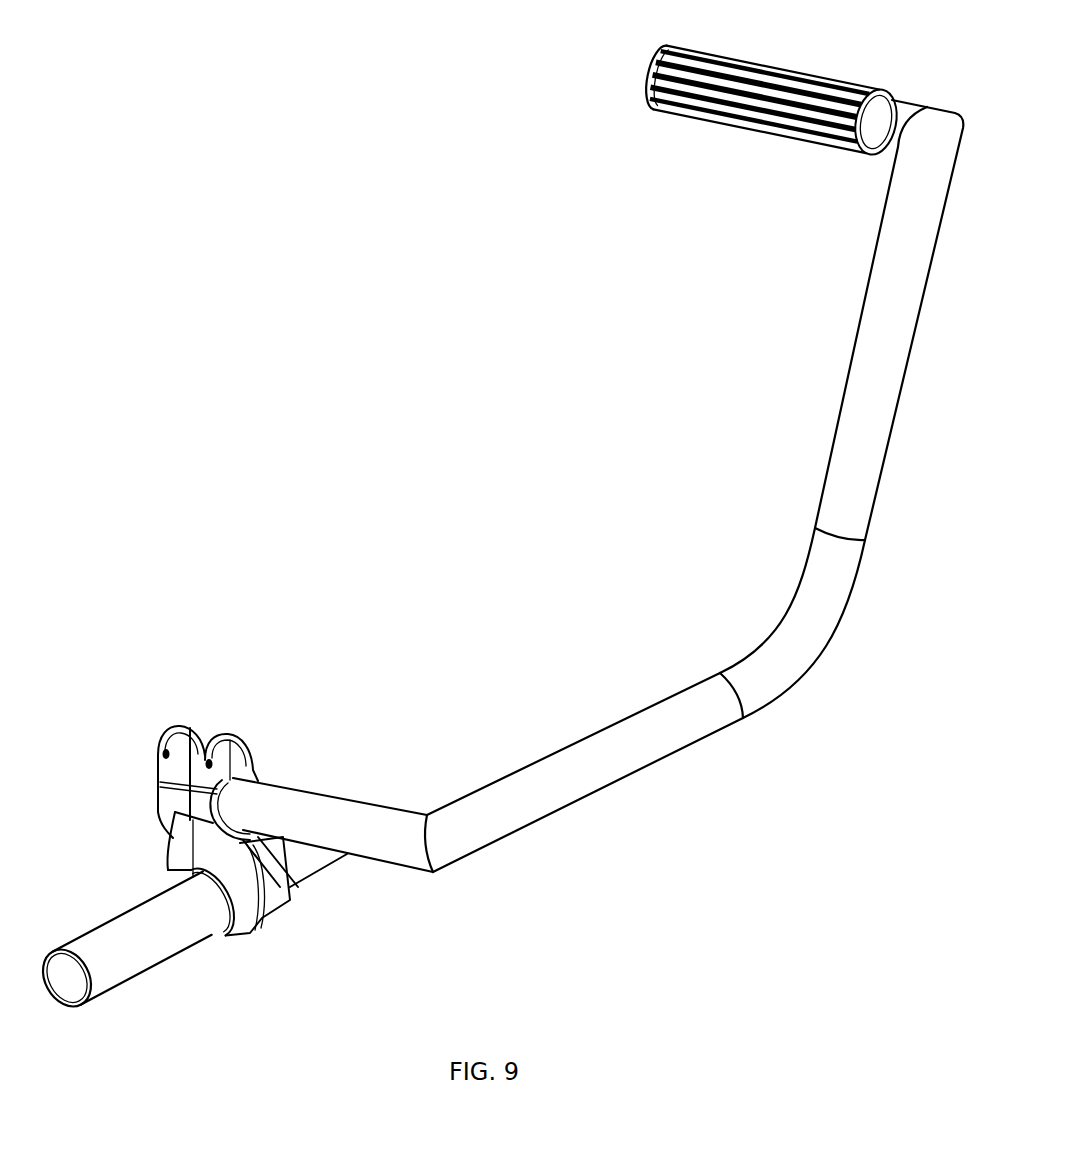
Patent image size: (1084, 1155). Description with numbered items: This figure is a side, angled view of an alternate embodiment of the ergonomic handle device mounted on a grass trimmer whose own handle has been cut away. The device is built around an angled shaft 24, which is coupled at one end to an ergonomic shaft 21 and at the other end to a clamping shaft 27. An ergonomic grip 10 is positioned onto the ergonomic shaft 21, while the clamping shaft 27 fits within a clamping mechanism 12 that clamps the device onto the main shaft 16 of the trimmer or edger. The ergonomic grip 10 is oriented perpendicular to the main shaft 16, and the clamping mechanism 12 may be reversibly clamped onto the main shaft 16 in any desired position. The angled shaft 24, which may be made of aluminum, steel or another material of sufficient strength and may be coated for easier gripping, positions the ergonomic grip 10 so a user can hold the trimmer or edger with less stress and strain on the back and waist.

The ergonomic grip 10 is at (702, 135).
The ergonomic shaft 21 is at (915, 88).
The angled shaft 24 is at (790, 699).
The clamping shaft 27 is at (318, 798).
The main shaft 16 is at (119, 969).
The clamping mechanism 12 is at (265, 929).